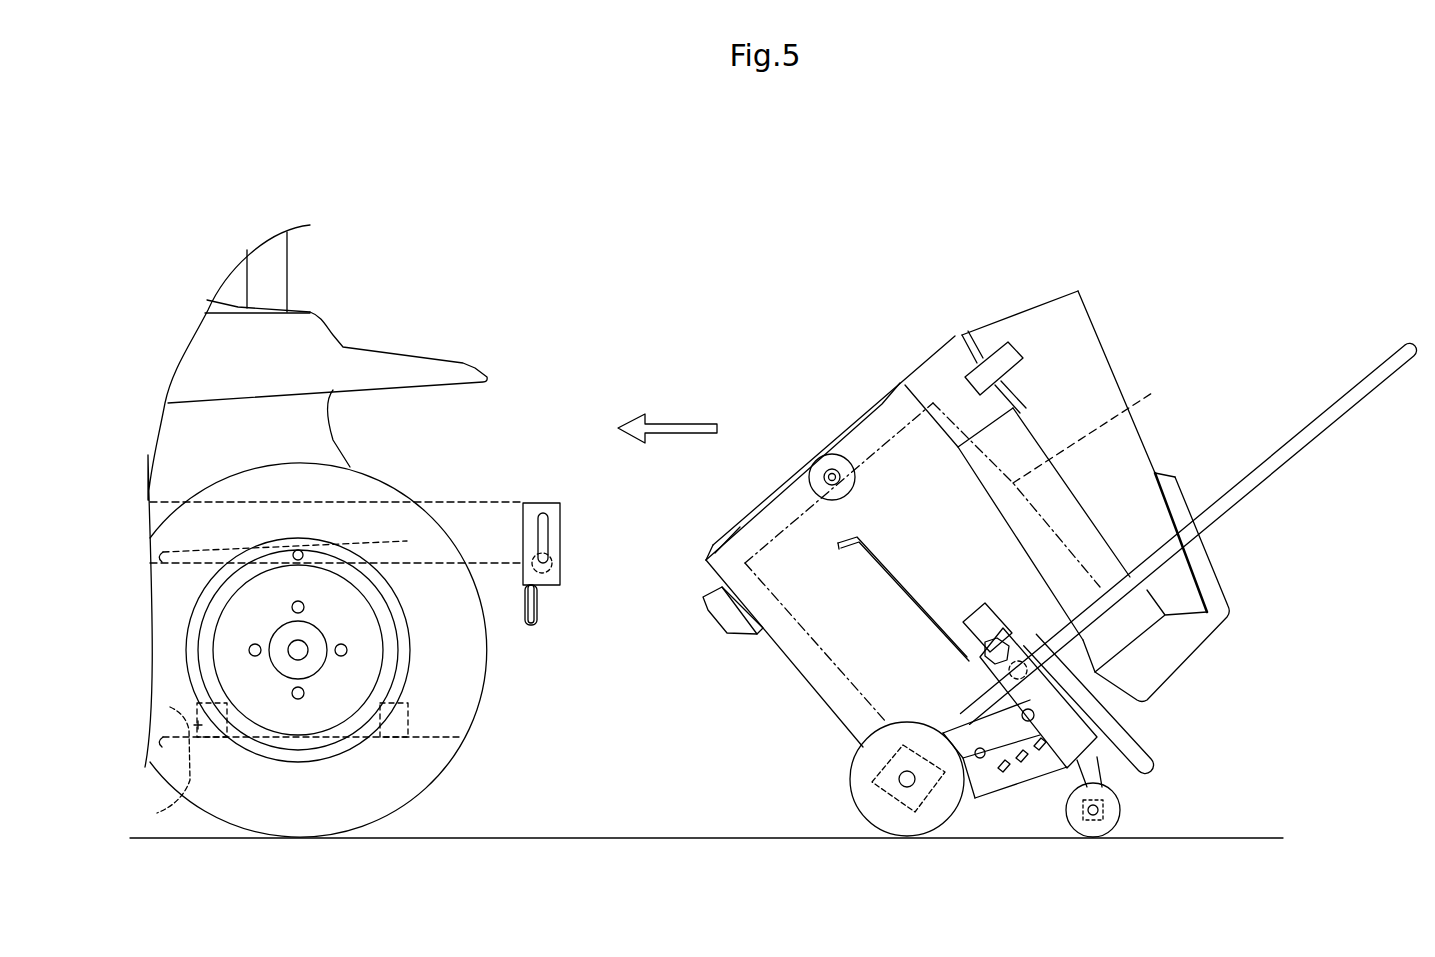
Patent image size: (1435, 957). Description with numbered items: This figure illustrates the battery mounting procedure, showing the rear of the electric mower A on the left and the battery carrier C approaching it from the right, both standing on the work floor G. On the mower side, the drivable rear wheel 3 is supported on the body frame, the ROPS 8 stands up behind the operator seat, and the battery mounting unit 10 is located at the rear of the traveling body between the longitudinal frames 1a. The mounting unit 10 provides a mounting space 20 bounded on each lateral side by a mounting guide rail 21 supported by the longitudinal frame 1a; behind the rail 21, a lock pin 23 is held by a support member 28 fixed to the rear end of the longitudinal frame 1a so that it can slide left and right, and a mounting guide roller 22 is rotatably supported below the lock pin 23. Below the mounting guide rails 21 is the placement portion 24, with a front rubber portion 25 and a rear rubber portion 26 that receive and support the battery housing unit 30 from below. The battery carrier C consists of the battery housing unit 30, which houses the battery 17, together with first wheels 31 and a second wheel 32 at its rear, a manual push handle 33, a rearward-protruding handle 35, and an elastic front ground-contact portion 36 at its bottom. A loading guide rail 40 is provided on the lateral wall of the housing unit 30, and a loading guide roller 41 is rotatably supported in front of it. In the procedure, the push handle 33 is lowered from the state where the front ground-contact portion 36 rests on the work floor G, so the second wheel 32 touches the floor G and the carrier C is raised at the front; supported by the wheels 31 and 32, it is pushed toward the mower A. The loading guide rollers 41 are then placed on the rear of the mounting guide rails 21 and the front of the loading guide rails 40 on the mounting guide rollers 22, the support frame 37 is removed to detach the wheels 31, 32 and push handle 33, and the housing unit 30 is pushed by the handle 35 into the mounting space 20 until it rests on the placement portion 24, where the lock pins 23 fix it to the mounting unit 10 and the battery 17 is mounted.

The longitudinal frame 1a is at (480, 505).
The rear wheel 3 is at (423, 775).
The ROPS 8 is at (290, 272).
The battery mounting unit 10 is at (543, 413).
The battery 17 is at (1121, 496).
The mounting space 20 is at (511, 645).
The mounting guide rail 21 is at (374, 540).
The mounting guide roller 22 is at (560, 572).
The lock pin 23 is at (548, 530).
The placement portion 24 is at (289, 768).
The front rubber portion 25 is at (200, 725).
The rear rubber portion 26 is at (407, 716).
The support member 28 is at (545, 510).
The battery housing unit 30 is at (938, 358).
The first wheel 31 is at (858, 780).
The second wheel 32 is at (1120, 805).
The manual push handle 33 is at (1310, 440).
The handle 35 is at (1155, 745).
The front ground-contact portion 36 is at (730, 628).
The support frame 37 is at (1040, 785).
The loading guide rail 40 is at (893, 582).
The loading guide roller 41 is at (826, 468).
The electric mower A is at (452, 255).
The battery carrier C is at (1283, 207).
The work floor G is at (659, 833).